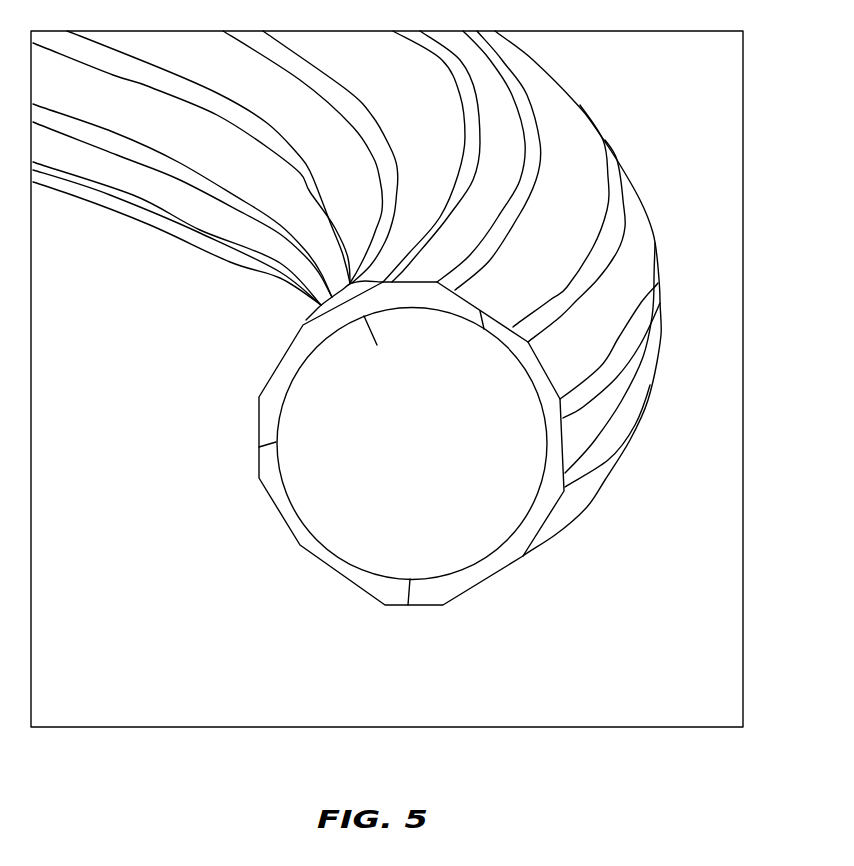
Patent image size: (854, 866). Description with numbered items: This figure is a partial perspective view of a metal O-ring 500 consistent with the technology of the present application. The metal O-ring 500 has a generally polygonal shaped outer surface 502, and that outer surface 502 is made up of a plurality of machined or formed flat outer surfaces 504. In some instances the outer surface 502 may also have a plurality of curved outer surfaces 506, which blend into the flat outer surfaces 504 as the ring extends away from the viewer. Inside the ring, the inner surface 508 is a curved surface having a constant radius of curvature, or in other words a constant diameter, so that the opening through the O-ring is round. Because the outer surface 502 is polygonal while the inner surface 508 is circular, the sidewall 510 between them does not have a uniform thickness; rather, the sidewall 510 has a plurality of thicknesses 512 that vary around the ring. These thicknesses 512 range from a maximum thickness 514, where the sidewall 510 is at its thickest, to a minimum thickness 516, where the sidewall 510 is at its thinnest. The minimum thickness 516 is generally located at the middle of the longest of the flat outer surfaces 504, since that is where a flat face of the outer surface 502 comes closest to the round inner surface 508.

The metal O-ring 500 is at (600, 589).
The outer surface 502 is at (633, 388).
The flat outer surface 504 is at (615, 305).
The curved outer surface 506 is at (498, 167).
The inner surface 508 is at (337, 541).
The sidewall 510 is at (542, 504).
The thicknesses 512 is at (262, 448).
The maximum thickness 514 is at (414, 598).
The minimum thickness 516 is at (482, 318).